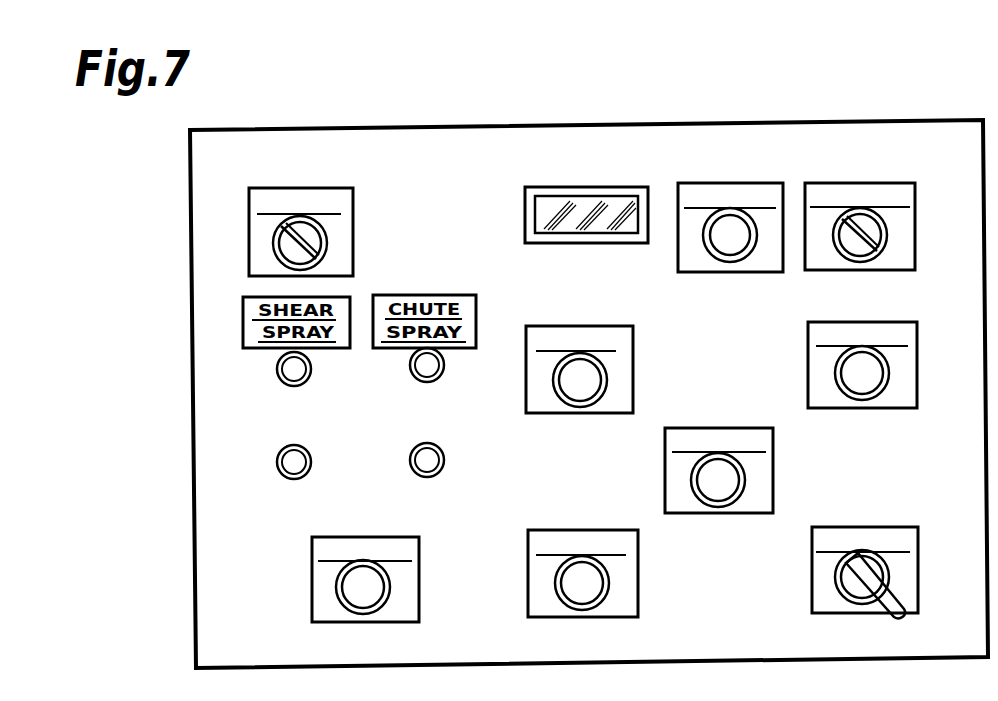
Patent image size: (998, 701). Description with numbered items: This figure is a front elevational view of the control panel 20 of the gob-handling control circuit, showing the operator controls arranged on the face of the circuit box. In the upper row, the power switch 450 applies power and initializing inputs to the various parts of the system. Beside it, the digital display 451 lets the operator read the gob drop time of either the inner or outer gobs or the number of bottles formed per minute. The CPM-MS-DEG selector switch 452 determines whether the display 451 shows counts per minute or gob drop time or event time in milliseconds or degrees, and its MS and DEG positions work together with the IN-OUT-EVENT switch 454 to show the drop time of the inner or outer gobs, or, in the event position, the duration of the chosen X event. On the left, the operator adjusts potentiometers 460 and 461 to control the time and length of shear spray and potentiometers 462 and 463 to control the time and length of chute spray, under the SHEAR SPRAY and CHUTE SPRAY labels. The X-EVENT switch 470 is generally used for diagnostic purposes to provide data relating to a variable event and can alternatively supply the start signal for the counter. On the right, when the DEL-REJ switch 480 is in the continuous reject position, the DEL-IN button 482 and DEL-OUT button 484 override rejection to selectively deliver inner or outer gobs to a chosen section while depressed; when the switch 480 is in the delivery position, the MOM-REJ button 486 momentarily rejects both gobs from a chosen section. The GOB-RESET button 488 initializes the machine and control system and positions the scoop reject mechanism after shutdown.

The control panel 20 is at (966, 118).
The power switch 450 is at (302, 190).
The digital display 451 is at (614, 150).
The CPM-MS-DEG selector switch 452 is at (732, 187).
The IN-OUT-EVENT switch 454 is at (860, 186).
The potentiometer 460 is at (308, 380).
The potentiometer 461 is at (308, 452).
The potentiometer 462 is at (440, 378).
The potentiometer 463 is at (442, 450).
The X-EVENT switch 470 is at (397, 498).
The DEL-REJ switch 480 is at (855, 527).
The DEL-IN button 482 is at (625, 306).
The DEL-OUT button 484 is at (616, 490).
The MOM-REJ button 486 is at (853, 324).
The GOB-RESET button 488 is at (728, 427).